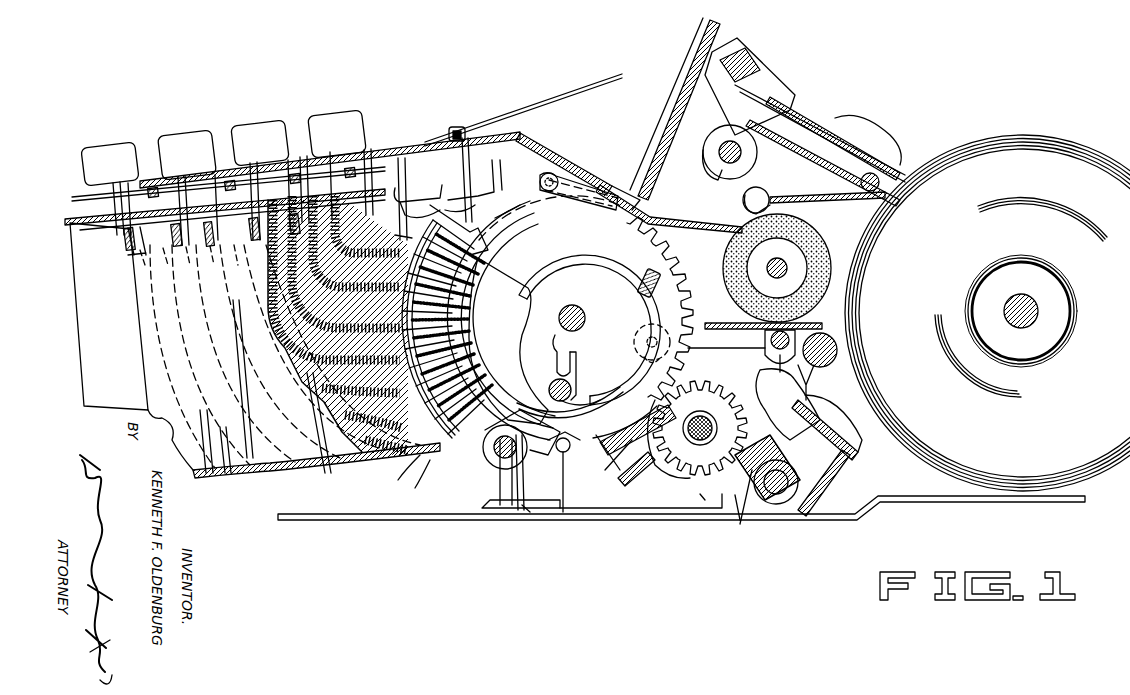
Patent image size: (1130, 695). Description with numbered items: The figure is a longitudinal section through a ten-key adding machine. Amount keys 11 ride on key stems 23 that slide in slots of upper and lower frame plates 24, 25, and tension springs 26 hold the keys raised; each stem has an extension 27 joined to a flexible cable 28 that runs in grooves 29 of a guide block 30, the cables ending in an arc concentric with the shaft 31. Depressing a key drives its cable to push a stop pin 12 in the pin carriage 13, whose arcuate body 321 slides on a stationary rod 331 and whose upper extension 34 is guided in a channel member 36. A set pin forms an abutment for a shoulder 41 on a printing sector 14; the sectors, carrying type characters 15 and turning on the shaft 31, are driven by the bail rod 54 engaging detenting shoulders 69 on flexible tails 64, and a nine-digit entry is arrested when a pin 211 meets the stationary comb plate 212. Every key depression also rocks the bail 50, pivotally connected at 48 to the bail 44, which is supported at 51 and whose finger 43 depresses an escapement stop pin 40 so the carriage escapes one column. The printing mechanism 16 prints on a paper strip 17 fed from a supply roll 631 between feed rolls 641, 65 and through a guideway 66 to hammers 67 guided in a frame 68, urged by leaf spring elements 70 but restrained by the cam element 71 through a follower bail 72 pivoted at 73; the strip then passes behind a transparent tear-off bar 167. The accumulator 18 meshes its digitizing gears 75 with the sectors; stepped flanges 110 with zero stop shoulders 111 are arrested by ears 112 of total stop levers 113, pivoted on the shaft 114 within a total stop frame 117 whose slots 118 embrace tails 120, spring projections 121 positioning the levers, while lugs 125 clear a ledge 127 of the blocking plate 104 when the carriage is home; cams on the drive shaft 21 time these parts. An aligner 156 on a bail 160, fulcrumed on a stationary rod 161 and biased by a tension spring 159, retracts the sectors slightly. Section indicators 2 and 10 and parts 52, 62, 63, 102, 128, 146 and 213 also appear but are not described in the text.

The section line 2 is at (244, 312).
The section line 10 is at (725, 269).
The amount keys 11 is at (137, 142).
The stop pin 12 is at (183, 475).
The pin carriage 13 is at (452, 455).
The printing sectors 14 is at (586, 317).
The type characters 15 is at (512, 212).
The printing mechanism 16 is at (650, 110).
The paper strip 17 is at (685, 50).
The accumulator 18 is at (680, 478).
The drive shaft 21 is at (822, 333).
The key stems 23 is at (120, 287).
The upper frame plate 24 is at (80, 217).
The lower frame plate 25 is at (283, 480).
The tension springs 26 is at (235, 478).
The key stem extension 27 is at (115, 231).
The flexible cable 28 is at (275, 290).
The grooves 29 is at (418, 478).
The guide block 30 is at (401, 474).
The shaft 31 is at (575, 305).
The pin carriage extension 34 is at (496, 206).
The channel member 36 is at (506, 176).
The escapement stop pins 40 is at (455, 285).
The shoulder 41 is at (500, 350).
The finger 43 is at (397, 199).
The bail 44 is at (438, 180).
The pivotal connection 48 is at (420, 175).
The bail 50 is at (130, 255).
The pivot support 51 is at (458, 170).
The lever 52 is at (440, 212).
The bail rod 54 is at (596, 372).
The lever 62 is at (565, 348).
The lever arm 63 is at (576, 362).
The flexible tails 64 is at (540, 318).
The gripping feed roll 65 is at (828, 255).
The guideway 66 is at (690, 240).
The printing hammers 67 is at (660, 137).
The hammer frame 68 is at (752, 55).
The detenting shoulders 69 is at (548, 382).
The leaf spring elements 70 is at (780, 75).
The rotatable cam element 71 is at (757, 150).
The follower bail 72 is at (820, 165).
The pivot 73 is at (860, 182).
The digitizing gears 75 is at (741, 351).
The post 102 is at (490, 500).
The blocking plate 104 is at (640, 518).
The stepped flange 110 is at (645, 460).
The zero stop shoulder 111 is at (760, 372).
The ear 112 is at (814, 385).
The total stop lever 113 is at (825, 408).
The shaft 114 is at (748, 520).
The total stop frame 117 is at (845, 465).
The slots 118 is at (862, 445).
The tails 120 is at (865, 405).
The flexible spring projection 121 is at (800, 510).
The lugs 125 is at (722, 519).
The ledge 127 is at (690, 505).
The block 128 is at (775, 438).
The bar 146 is at (720, 318).
The aligner 156 is at (570, 403).
The tension spring 159 is at (600, 480).
The bail 160 is at (625, 488).
The stationary rod 161 is at (563, 512).
The transparent tear-off bar 167 is at (628, 175).
The pin 211 is at (652, 372).
The stationary comb plate 212 is at (518, 472).
The foot 213 is at (525, 512).
The arcuate body 321 is at (500, 322).
The stationary rod 331 is at (490, 470).
The supply roll 631 is at (1000, 134).
The gripping feed roll 641 is at (770, 192).